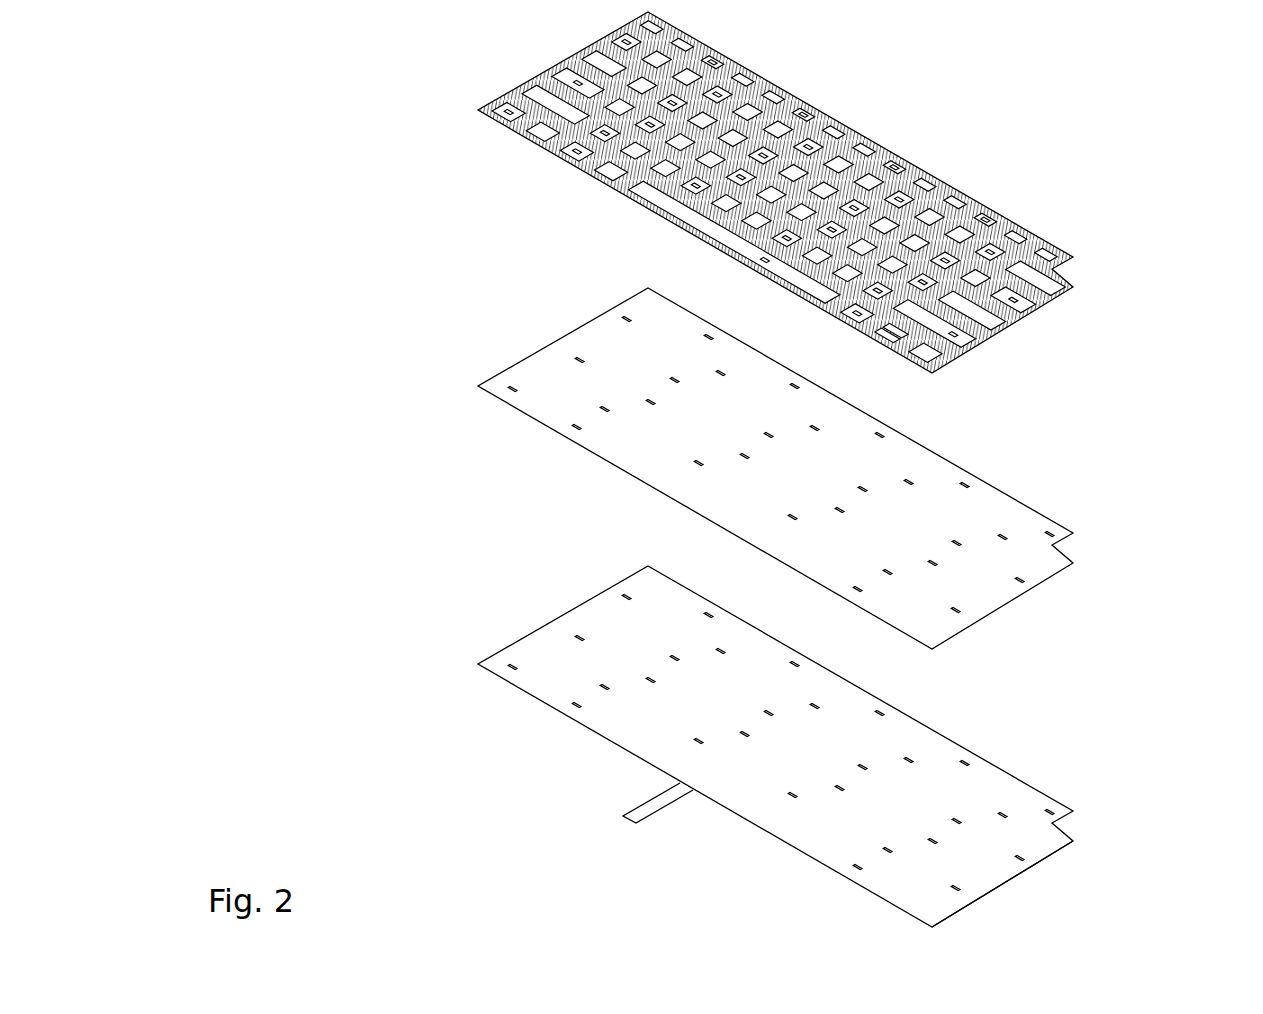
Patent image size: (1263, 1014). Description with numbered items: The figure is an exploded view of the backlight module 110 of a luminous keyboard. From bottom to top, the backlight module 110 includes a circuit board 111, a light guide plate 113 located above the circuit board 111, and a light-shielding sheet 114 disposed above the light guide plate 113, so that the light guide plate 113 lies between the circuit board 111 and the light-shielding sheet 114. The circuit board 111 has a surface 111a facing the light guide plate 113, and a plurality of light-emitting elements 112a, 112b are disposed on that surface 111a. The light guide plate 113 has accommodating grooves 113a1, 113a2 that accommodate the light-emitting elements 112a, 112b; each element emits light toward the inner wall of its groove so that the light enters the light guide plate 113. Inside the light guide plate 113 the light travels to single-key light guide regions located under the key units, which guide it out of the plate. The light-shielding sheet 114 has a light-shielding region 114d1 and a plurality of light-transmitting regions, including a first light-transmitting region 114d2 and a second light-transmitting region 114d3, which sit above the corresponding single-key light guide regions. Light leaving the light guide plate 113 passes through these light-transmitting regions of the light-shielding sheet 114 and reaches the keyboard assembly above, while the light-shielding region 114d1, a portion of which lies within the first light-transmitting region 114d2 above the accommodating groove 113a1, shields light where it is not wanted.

The backlight module 110 is at (1228, 48).
The circuit board 111 is at (789, 746).
The surface 111a is at (1003, 878).
The light-emitting element 112a is at (816, 704).
The light-emitting element 112b is at (768, 709).
The light guide plate 113 is at (790, 468).
The accommodating groove 113a1 is at (817, 426).
The accommodating groove 113a2 is at (769, 431).
The light-shielding sheet 114 is at (753, 192).
The light-shielding region 114d1 is at (488, 105).
The first light-transmitting region 114d2 is at (821, 137).
The second light-transmitting region 114d3 is at (850, 158).